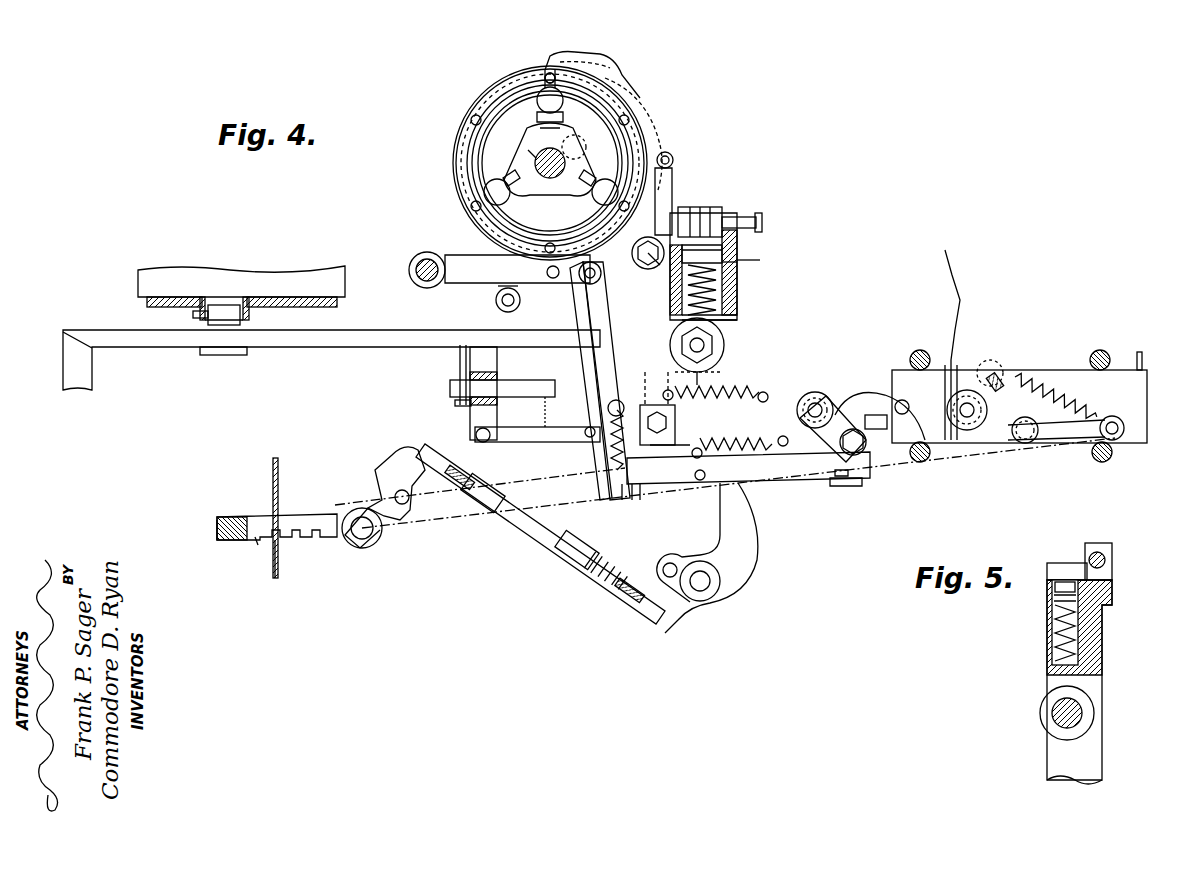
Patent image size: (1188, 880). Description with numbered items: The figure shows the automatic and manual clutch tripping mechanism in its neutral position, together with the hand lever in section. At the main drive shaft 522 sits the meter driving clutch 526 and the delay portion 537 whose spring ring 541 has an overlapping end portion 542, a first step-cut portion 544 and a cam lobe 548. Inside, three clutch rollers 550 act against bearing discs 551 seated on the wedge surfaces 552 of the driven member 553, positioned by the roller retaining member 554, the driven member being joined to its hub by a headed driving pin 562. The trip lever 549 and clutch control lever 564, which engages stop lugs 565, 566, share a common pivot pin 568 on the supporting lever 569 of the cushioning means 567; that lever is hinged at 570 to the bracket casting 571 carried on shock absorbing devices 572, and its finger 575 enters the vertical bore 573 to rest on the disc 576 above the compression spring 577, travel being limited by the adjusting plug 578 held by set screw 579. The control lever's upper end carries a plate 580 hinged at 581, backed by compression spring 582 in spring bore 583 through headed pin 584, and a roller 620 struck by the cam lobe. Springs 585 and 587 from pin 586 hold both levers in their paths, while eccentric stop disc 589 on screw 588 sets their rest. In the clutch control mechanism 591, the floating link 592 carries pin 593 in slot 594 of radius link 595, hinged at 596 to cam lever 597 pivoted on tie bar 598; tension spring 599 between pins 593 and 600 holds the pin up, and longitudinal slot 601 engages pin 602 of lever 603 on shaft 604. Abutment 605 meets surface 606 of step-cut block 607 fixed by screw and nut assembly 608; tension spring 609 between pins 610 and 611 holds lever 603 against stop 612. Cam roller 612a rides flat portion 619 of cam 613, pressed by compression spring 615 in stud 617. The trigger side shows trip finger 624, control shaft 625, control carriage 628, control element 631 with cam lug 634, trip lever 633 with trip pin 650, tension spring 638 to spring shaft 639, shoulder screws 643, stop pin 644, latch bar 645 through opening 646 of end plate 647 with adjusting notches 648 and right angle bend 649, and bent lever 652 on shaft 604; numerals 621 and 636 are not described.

In FIG. 4, the main drive shaft 522 is at (540, 156).
In FIG. 4, the meter driving clutch 526 is at (472, 78).
In FIG. 4, the delay portion of clutch mechanism 537 is at (449, 142).
In FIG. 4, the spring ring 541 is at (468, 163).
In FIG. 4, the overlapping end portion 542 is at (563, 65).
In FIG. 4, the first portion of the step-cut 544 is at (546, 70).
In FIG. 4, the cam lobe 548 is at (600, 66).
In FIG. 4, the trip lever 549 is at (681, 201).
In FIG. 4, the clutch rollers 550 is at (551, 146).
In FIG. 4, the bearing discs 551 is at (551, 145).
In FIG. 4, the wedge surfaces 552 is at (540, 148).
In FIG. 4, the driven member 553 is at (548, 197).
In FIG. 4, the roller retaining member 554 is at (500, 125).
In FIG. 4, the headed driving pin 562 is at (589, 136).
In FIG. 4, the clutch control lever 564 is at (645, 222).
In FIG. 5, the clutch control lever 564 is at (1100, 692).
In FIG. 4, the stop lug 565 is at (642, 112).
In FIG. 4, the stop lug 566 is at (675, 150).
In FIG. 4, the shock absorbing or cushioning means 567 is at (768, 280).
In FIG. 4, the common pivot pin 568 is at (650, 262).
In FIG. 5, the common pivot pin 568 is at (1052, 708).
In FIG. 4, the supporting lever 569 is at (740, 242).
In FIG. 4, the hinge 570 is at (578, 283).
In FIG. 4, the bracket casting 571 is at (729, 312).
In FIG. 4, the shock absorbing devices 572 is at (740, 330).
In FIG. 4, the vertical bore 573 is at (735, 300).
In FIG. 4, the finger 575 is at (740, 254).
In FIG. 4, the disc 576 is at (747, 266).
In FIG. 4, the compression spring 577 is at (733, 290).
In FIG. 4, the adjusting plug 578 is at (712, 210).
In FIG. 4, the set screw 579 is at (760, 218).
In FIG. 4, the plate 580 is at (672, 156).
In FIG. 5, the plate 580 is at (1055, 565).
In FIG. 5, the hinge 581 is at (1106, 560).
In FIG. 5, the compression spring 582 is at (1055, 648).
In FIG. 5, the spring bore 583 is at (1052, 626).
In FIG. 5, the headed pin 584 is at (1052, 590).
In FIG. 4, the spring 585 is at (717, 398).
In FIG. 4, the pin 586 is at (776, 383).
In FIG. 4, the spring 587 is at (715, 378).
In FIG. 4, the screw 588 is at (705, 345).
In FIG. 4, the eccentric stop disc 589 is at (725, 352).
In FIG. 4, the clutch control mechanism 591 is at (779, 516).
In FIG. 4, the floating link 592 is at (780, 480).
In FIG. 4, the pin 593 is at (622, 492).
In FIG. 4, the slot 594 is at (634, 500).
In FIG. 4, the radius link 595 is at (604, 355).
In FIG. 4, the hinge 596 is at (592, 288).
In FIG. 4, the cam lever 597 is at (468, 258).
In FIG. 4, the tie bar 598 is at (425, 252).
In FIG. 4, the tension spring 599 is at (598, 463).
In FIG. 4, the pin 600 is at (525, 402).
In FIG. 4, the longitudinal slot 601 is at (846, 486).
In FIG. 4, the pin 602 is at (840, 478).
In FIG. 4, the lever 603 is at (855, 398).
In FIG. 4, the shaft 604 is at (816, 392).
In FIG. 4, the abutment 605 is at (680, 474).
In FIG. 4, the surface 606 is at (673, 436).
In FIG. 4, the step-cut block 607 is at (672, 418).
In FIG. 4, the screw and nut assembly 608 is at (657, 394).
In FIG. 4, the tension spring 609 is at (740, 433).
In FIG. 4, the pin 610 is at (783, 436).
In FIG. 4, the pin 611 is at (702, 453).
In FIG. 4, the stop 612 is at (860, 455).
In FIG. 4, the cam roller 612a is at (526, 302).
In FIG. 4, the cam 613 is at (462, 180).
In FIG. 4, the compression spring 615 is at (500, 287).
In FIG. 4, the stud 617 is at (496, 302).
In FIG. 4, the flat portion 619 is at (524, 269).
In FIG. 4, the roller 620 is at (673, 160).
In FIG. 4, the plate 621 is at (997, 340).
In FIG. 4, the trip finger 624 is at (948, 266).
In FIG. 4, the control shaft 625 is at (968, 432).
In FIG. 4, the control carriage 628 is at (1040, 440).
In FIG. 4, the control element 631 is at (957, 365).
In FIG. 4, the trip lever 633 is at (955, 445).
In FIG. 4, the cam lug 634 is at (1001, 380).
In FIG. 4, the pin 636 is at (1005, 357).
In FIG. 4, the tension spring 638 is at (1055, 397).
In FIG. 4, the spring shaft 639 is at (1112, 420).
In FIG. 4, the shoulder screws 643 is at (918, 350).
In FIG. 4, the stop pin 644 is at (1138, 355).
In FIG. 4, the latch bar 645 is at (250, 516).
In FIG. 4, the opening 646 is at (279, 482).
In FIG. 4, the end plate 647 is at (279, 568).
In FIG. 4, the adjusting notches 648 is at (256, 540).
In FIG. 4, the right angle bend 649 is at (217, 523).
In FIG. 4, the trip pin 650 is at (911, 395).
In FIG. 4, the bent lever 652 is at (871, 409).